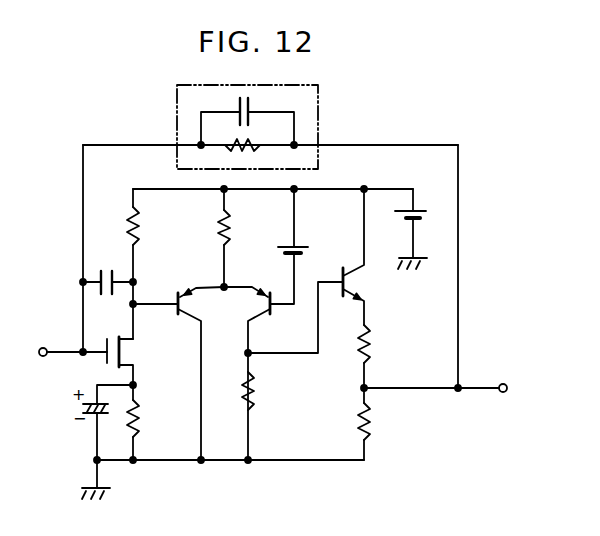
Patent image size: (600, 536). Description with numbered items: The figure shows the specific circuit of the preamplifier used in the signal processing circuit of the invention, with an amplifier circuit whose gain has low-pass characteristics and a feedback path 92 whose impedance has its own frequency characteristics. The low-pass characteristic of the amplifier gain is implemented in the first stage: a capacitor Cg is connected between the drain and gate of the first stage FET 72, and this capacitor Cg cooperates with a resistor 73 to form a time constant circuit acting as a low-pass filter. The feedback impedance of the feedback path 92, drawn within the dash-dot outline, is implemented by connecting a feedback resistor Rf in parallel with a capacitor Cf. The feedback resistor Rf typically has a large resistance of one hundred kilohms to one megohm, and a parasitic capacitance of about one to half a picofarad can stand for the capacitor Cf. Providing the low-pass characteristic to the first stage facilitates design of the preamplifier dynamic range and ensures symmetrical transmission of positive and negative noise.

The feedback path 92 is at (270, 115).
The resistor 73 is at (138, 219).
The first stage FET 72 is at (131, 351).
The capacitor Cf is at (246, 107).
The feedback resistor Rf is at (246, 136).
The capacitor Cg is at (104, 271).